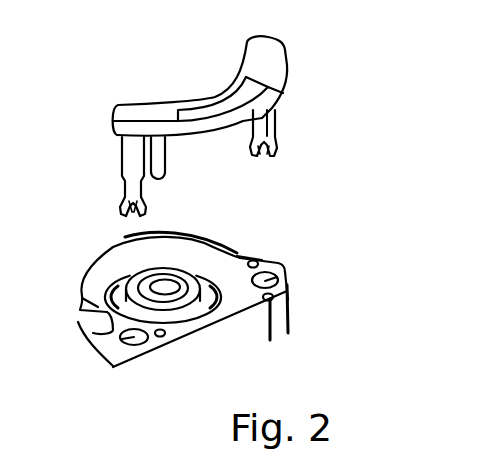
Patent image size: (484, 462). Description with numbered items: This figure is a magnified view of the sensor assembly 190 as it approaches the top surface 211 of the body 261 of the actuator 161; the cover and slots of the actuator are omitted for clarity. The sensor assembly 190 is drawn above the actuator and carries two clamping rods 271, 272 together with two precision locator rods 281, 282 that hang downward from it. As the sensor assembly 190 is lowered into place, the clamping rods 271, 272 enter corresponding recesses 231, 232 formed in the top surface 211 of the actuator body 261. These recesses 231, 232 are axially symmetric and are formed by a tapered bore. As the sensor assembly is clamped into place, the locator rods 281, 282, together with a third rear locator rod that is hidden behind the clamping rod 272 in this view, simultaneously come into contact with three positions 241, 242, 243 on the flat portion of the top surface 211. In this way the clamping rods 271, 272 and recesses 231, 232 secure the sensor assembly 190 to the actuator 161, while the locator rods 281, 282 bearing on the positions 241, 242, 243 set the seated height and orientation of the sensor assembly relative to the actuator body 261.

The sensor assembly 190 is at (105, 188).
The clamping rod 271 is at (131, 163).
The precision locator rod 281 is at (165, 170).
The clamping rod 272 is at (254, 130).
The precision locator rod 282 is at (268, 122).
The actuator 161 is at (97, 257).
The top surface 211 is at (241, 262).
The position 243 is at (256, 256).
The recess 232 is at (283, 272).
The position 242 is at (256, 299).
The actuator body 261 is at (282, 308).
The position 241 is at (168, 345).
The recess 231 is at (130, 337).